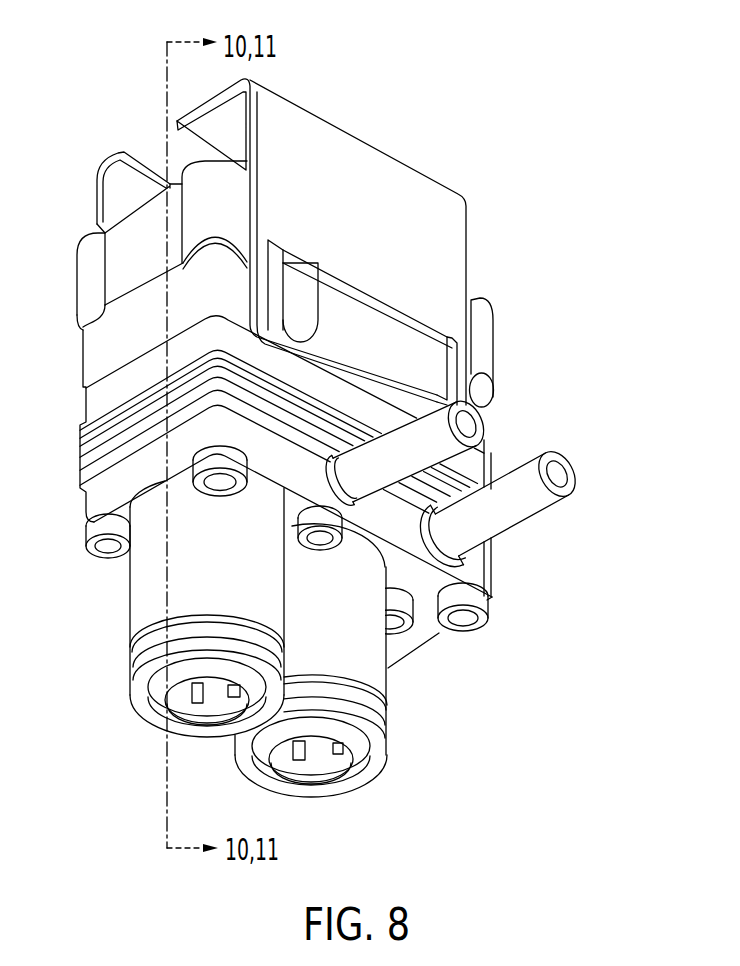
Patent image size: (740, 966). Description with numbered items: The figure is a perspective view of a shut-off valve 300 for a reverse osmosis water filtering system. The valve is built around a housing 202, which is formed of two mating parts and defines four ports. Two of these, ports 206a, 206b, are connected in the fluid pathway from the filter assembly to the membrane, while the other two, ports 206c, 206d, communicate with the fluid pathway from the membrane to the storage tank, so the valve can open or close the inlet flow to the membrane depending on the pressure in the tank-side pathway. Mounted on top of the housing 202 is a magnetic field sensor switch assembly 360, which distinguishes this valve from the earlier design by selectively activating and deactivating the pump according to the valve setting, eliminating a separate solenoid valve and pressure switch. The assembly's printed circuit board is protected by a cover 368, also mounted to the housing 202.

The shut-off valve 300 is at (604, 294).
The housing 202 is at (110, 490).
The magnetic field sensor switch assembly 360 is at (374, 178).
The cover 368 is at (449, 239).
The port 206a is at (333, 768).
The port 206b is at (218, 712).
The port 206c is at (567, 492).
The port 206d is at (478, 460).